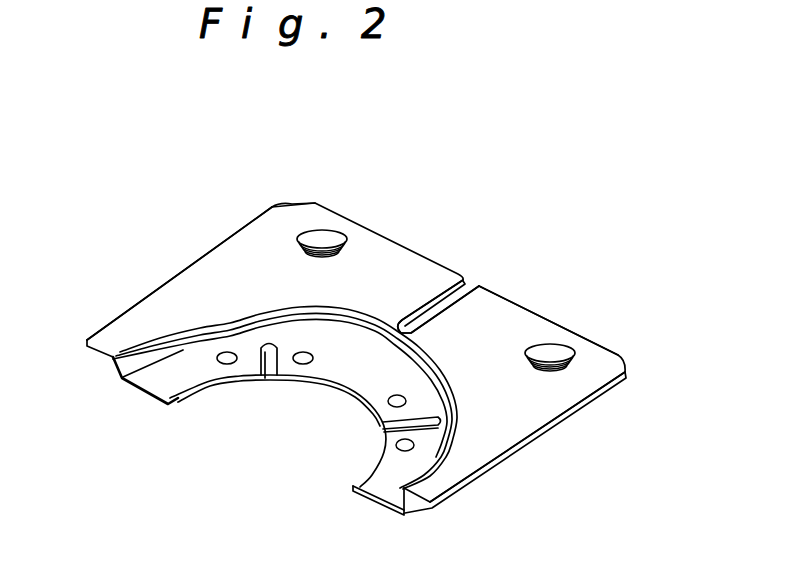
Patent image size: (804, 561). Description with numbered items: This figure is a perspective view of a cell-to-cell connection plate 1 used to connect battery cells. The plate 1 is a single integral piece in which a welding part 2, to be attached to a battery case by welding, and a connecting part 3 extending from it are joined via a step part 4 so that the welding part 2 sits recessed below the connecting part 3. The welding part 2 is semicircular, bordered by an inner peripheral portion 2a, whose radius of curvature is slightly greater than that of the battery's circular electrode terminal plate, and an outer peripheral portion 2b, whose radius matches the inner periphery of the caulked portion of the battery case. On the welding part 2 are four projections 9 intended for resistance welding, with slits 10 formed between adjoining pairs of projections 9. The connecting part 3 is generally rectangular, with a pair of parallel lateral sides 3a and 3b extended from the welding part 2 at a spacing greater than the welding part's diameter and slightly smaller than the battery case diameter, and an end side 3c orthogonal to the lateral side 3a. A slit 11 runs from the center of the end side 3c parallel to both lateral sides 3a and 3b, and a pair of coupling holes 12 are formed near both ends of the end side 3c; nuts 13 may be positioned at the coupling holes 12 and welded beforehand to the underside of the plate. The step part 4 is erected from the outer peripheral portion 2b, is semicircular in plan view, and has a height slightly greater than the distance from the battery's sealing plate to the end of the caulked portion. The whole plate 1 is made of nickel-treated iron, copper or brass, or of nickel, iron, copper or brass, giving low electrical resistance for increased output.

The cell-to-cell connection plate 1 is at (430, 242).
The welding part 2 is at (348, 382).
The inner peripheral portion 2a is at (227, 385).
The outer peripheral portion 2b is at (185, 405).
The connecting part 3 is at (363, 245).
The lateral side 3a is at (200, 260).
The lateral side 3b is at (549, 430).
The end side 3c is at (515, 300).
The step part 4 is at (160, 352).
The projections 9 is at (228, 352).
The slits 10 is at (265, 358).
The slit 11 is at (445, 289).
The coupling holes 12 is at (312, 231).
The nuts 13 is at (332, 245).